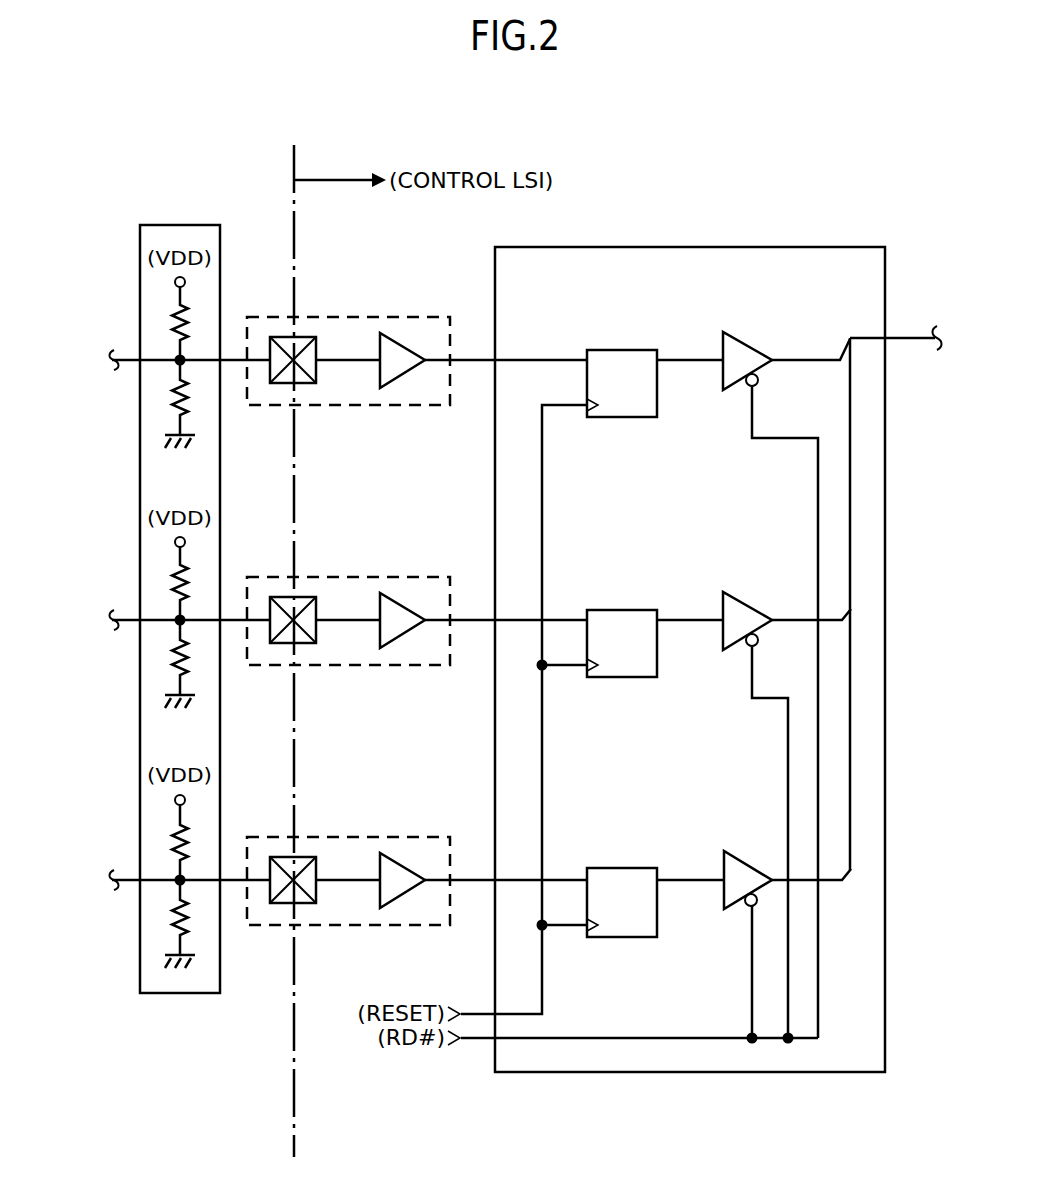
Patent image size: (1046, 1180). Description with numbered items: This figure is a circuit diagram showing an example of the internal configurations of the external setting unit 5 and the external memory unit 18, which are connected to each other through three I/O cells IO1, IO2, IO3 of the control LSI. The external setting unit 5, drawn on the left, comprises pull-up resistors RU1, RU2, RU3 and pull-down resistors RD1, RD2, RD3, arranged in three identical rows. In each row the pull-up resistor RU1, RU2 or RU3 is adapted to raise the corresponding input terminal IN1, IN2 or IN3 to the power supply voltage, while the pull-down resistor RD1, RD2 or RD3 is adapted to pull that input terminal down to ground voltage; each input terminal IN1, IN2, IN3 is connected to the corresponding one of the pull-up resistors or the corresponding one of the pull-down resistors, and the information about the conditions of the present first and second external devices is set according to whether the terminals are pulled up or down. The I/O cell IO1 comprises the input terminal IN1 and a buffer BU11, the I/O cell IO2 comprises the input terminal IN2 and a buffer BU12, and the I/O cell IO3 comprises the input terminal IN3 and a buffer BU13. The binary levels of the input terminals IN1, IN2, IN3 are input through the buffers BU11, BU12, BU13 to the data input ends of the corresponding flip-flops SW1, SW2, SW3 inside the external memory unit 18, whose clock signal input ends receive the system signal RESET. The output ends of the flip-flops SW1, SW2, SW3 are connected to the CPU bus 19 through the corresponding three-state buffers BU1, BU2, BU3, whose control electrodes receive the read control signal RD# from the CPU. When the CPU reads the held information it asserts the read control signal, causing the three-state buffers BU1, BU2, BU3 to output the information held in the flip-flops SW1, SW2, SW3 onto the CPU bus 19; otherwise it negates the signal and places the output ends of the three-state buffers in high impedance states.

The external setting unit 5 is at (160, 1006).
The external memory unit 18 is at (813, 236).
The CPU bus 19 is at (910, 336).
The pull-up resistor RU1 is at (156, 327).
The pull-up resistor RU2 is at (156, 585).
The pull-up resistor RU3 is at (156, 842).
The pull-down resistor RD1 is at (170, 401).
The pull-down resistor RD2 is at (170, 663).
The pull-down resistor RD3 is at (170, 922).
The input terminal IN1 is at (297, 337).
The input terminal IN2 is at (297, 597).
The input terminal IN3 is at (297, 857).
The buffer BU11 is at (403, 334).
The buffer BU12 is at (403, 594).
The buffer BU13 is at (403, 854).
The I/O cell IO1 is at (390, 410).
The I/O cell IO2 is at (392, 670).
The I/O cell IO3 is at (390, 928).
The flip-flop SW1 is at (622, 383).
The flip-flop SW2 is at (622, 643).
The flip-flop SW3 is at (622, 902).
The 3-state buffer BU1 is at (746, 333).
The 3-state buffer BU2 is at (746, 593).
The 3-state buffer BU3 is at (747, 853).